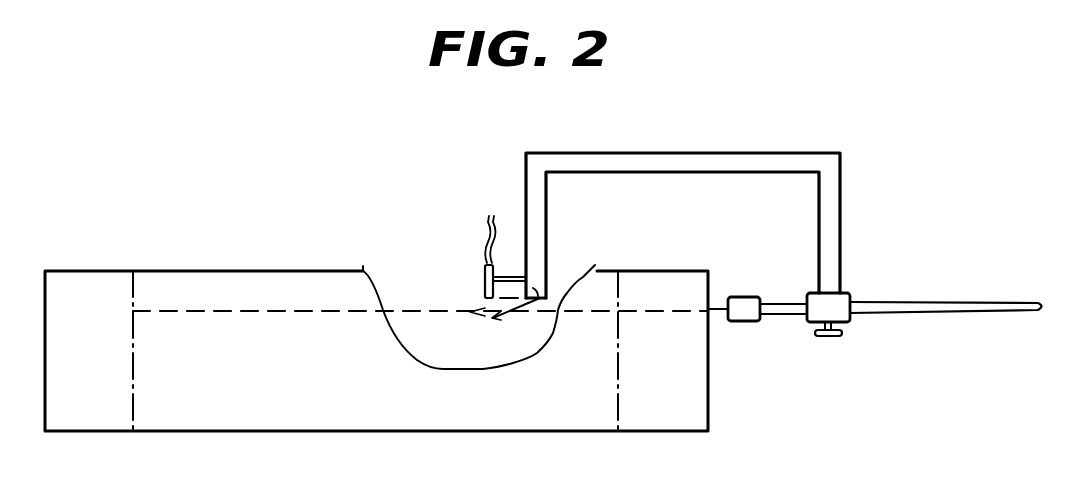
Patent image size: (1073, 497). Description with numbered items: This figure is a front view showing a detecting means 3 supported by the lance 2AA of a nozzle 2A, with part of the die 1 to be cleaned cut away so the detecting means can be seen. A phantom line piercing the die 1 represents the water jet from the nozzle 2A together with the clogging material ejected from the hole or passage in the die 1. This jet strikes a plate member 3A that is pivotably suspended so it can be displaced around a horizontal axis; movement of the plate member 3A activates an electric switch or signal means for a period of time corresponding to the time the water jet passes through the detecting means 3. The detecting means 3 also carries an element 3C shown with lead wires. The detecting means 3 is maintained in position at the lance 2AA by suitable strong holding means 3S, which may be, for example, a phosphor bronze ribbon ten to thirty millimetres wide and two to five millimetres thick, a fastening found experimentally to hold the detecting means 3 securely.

The die 1 is at (353, 433).
The detecting means 3 is at (549, 283).
The plate member 3A is at (511, 314).
The sensor element with lead wires 3C is at (483, 272).
The holding means 3S is at (847, 292).
The nozzle 2A is at (743, 323).
The lance 2AA is at (890, 311).